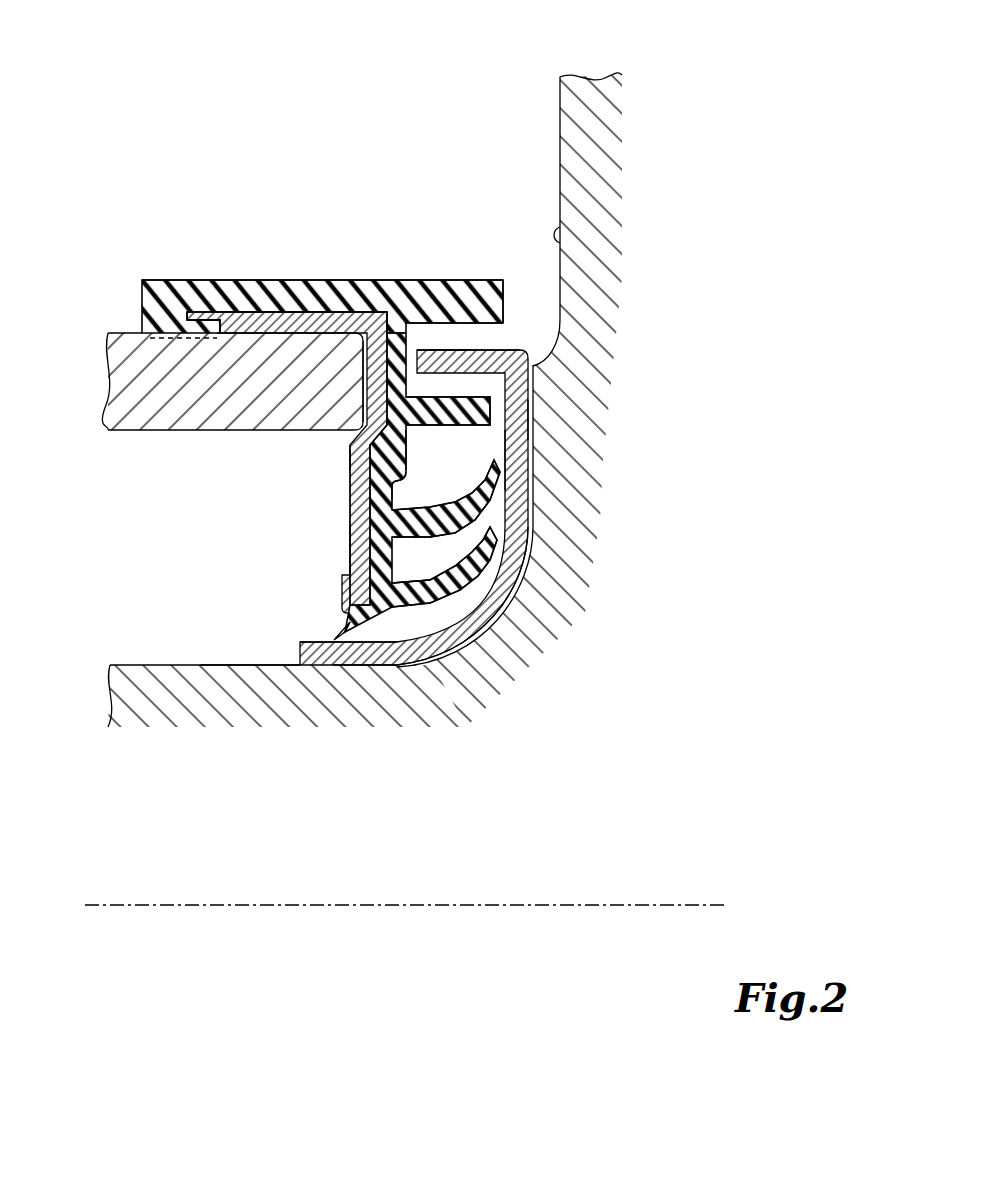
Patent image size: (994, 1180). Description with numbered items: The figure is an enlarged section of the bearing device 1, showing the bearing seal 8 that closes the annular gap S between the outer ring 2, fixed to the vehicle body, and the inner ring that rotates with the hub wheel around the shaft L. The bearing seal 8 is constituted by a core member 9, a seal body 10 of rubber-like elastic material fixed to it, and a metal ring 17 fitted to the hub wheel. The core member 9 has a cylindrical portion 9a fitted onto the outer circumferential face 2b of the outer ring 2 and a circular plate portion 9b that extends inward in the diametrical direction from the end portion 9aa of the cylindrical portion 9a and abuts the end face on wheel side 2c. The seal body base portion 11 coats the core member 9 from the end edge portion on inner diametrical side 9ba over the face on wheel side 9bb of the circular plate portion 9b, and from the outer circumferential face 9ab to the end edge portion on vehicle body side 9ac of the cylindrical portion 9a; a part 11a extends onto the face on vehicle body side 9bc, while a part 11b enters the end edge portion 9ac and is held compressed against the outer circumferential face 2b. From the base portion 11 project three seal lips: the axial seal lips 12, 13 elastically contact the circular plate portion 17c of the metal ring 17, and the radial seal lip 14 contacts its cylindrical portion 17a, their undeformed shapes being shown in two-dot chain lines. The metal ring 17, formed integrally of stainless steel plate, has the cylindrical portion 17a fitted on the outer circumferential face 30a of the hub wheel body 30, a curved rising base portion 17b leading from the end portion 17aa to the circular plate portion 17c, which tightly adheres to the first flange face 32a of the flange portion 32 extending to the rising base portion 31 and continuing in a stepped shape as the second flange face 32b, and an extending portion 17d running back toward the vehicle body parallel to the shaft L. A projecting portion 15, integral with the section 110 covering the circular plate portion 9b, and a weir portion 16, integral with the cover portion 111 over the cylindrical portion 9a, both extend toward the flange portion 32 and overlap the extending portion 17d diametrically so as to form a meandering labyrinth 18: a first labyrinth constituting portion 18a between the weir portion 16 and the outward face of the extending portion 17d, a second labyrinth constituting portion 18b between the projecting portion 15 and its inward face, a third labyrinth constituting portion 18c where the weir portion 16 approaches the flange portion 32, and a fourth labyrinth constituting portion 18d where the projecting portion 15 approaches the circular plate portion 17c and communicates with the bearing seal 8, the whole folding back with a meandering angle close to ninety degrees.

The bearing device 1 is at (365, 61).
The outer ring 2 is at (128, 412).
The outer circumferential face 2b is at (216, 305).
The end face on wheel side 2c is at (356, 325).
The bearing seal 8 is at (312, 560).
The core member 9 is at (216, 458).
The cylindrical portion of the core member 9a is at (283, 334).
The end portion 9aa is at (375, 316).
The outer circumferential face 9ab is at (292, 313).
The end edge portion on vehicle body side 9ac is at (187, 316).
The circular plate portion of the core member 9b is at (349, 526).
The end edge portion on inner diametrical side 9ba is at (347, 622).
The face on wheel side 9bb is at (394, 542).
The face on vehicle body side 9bc is at (346, 541).
The seal body 10 is at (432, 474).
The seal body base portion 11 is at (420, 451).
The section covering the circular plate portion 110 is at (394, 492).
The cover portion 111 is at (257, 300).
The part of the seal base portion 11a is at (342, 590).
The part of the seal base portion 11b is at (193, 343).
The seal lip 12 is at (500, 468).
The seal lip 13 is at (494, 533).
The seal lip 14 is at (353, 628).
The projecting portion 15 is at (536, 382).
The weir portion 16 is at (497, 282).
The metal ring 17 is at (505, 598).
The cylindrical portion 17a is at (343, 652).
The end portion 17aa is at (393, 648).
The rising base portion 17b is at (473, 645).
The circular plate portion 17c is at (533, 450).
The extending portion 17d is at (425, 326).
The labyrinth 18 is at (402, 300).
The first labyrinth constituting portion 18a is at (470, 338).
The second labyrinth constituting portion 18b is at (400, 418).
The third labyrinth constituting portion 18c is at (528, 302).
The fourth labyrinth constituting portion 18d is at (540, 420).
The hub wheel body 30 is at (150, 676).
The outer circumferential face 30a is at (230, 665).
The rising base portion 31 is at (520, 640).
The flange portion 32 is at (570, 126).
The first flange face 32a is at (530, 358).
The second flange face 32b is at (556, 240).
The annular gap S is at (128, 554).
The shaft L is at (690, 895).